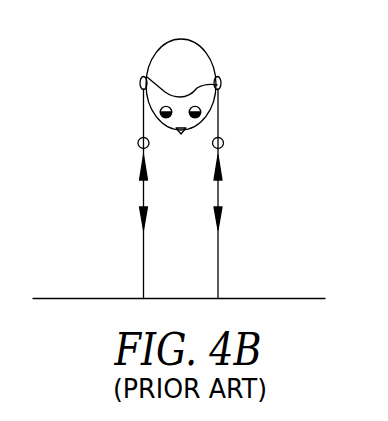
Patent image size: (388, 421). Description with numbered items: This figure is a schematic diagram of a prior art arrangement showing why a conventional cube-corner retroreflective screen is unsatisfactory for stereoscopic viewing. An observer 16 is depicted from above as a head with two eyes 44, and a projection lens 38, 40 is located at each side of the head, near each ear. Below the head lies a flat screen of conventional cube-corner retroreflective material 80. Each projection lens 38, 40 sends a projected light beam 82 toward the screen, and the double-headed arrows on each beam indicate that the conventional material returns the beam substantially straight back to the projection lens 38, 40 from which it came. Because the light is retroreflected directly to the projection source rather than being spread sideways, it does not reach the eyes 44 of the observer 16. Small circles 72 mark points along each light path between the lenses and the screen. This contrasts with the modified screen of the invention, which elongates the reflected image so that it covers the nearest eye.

The observer 16 is at (156, 52).
The projection lens 38 is at (140, 85).
The projection lens 40 is at (221, 85).
The eyes 44 is at (201, 115).
The sound source points 72 is at (224, 143).
The conventional cube-corner retroreflective material 80 is at (314, 285).
The projected light beam 82 is at (143, 258).